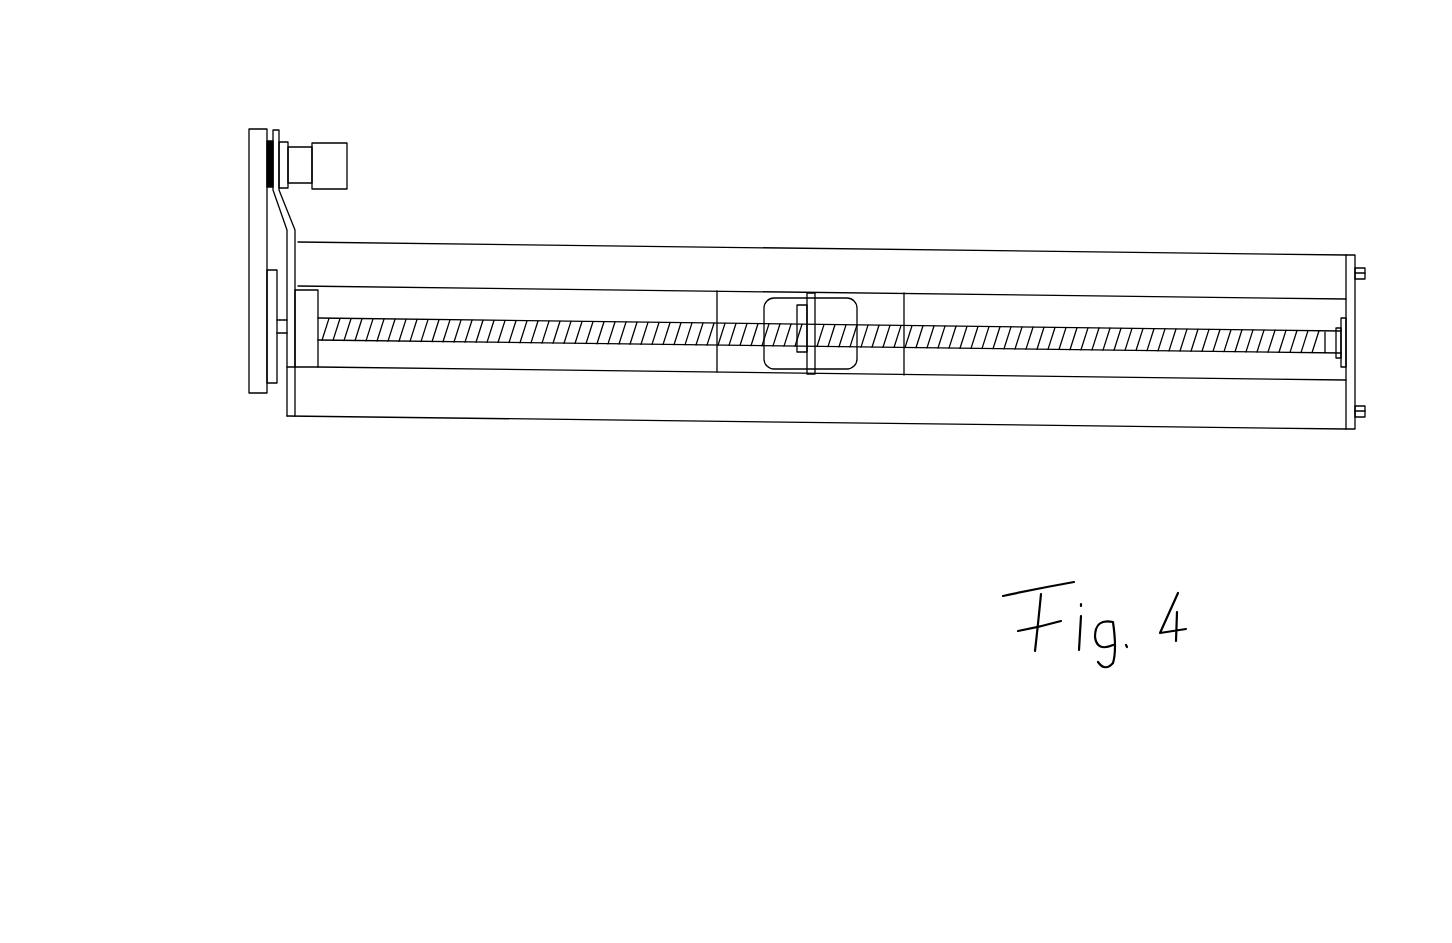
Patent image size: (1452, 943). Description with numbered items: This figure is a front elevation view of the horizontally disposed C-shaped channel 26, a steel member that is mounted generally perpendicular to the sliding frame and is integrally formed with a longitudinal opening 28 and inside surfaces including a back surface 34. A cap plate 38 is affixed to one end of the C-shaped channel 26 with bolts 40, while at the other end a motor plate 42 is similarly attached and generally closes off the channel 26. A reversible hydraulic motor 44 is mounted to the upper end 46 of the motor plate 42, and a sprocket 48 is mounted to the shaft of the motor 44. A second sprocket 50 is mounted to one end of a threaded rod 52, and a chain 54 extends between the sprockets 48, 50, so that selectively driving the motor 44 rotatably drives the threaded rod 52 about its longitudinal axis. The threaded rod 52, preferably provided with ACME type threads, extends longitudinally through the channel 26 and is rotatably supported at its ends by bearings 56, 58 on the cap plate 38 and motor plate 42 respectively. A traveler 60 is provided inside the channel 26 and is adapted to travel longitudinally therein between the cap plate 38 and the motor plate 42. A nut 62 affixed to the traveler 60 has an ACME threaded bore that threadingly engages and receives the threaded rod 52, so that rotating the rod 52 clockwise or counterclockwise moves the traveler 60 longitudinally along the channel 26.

The C-shaped channel 26 is at (988, 268).
The longitudinal opening 28 is at (917, 380).
The back surface 34 is at (1063, 366).
The cap plate 38 is at (1350, 358).
The bolts 40 is at (1366, 265).
The motor plate 42 is at (290, 390).
The reversible hydraulic motor 44 is at (323, 157).
The upper end 46 is at (276, 140).
The sprocket 48 is at (272, 155).
The sprocket 50 is at (270, 348).
The threaded rod 52 is at (550, 333).
The chain 54 is at (255, 232).
The bearing 56 is at (1340, 335).
The bearing 58 is at (302, 353).
The traveler 60 is at (740, 360).
The nut 62 is at (800, 355).